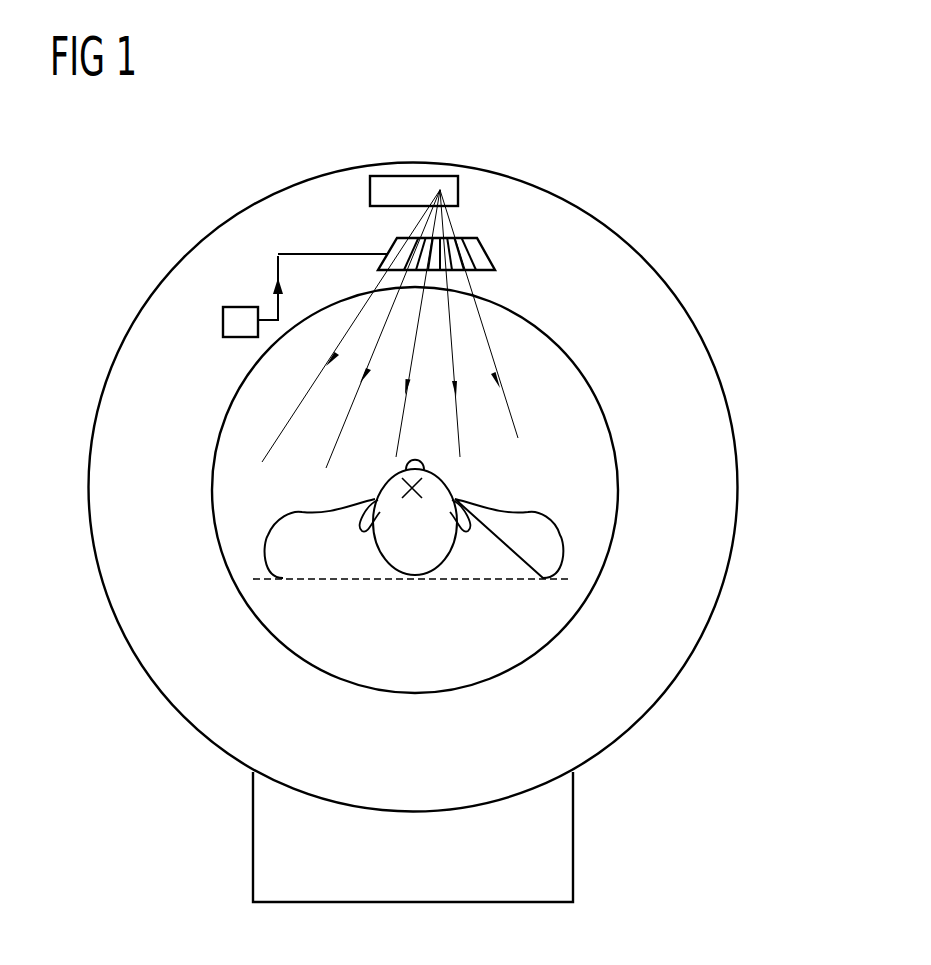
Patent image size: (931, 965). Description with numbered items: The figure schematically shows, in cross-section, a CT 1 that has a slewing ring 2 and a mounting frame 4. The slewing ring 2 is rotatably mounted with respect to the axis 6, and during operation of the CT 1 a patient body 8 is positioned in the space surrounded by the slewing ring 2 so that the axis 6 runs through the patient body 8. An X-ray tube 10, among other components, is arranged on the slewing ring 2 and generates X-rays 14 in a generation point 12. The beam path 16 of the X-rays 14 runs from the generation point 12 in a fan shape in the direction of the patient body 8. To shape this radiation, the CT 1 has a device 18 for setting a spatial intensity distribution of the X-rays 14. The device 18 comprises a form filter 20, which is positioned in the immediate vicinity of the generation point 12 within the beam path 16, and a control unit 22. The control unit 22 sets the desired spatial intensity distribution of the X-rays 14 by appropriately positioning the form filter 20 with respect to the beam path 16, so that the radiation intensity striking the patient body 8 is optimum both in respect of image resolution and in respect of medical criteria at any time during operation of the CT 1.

The CT 1 is at (118, 190).
The slewing ring 2 is at (628, 243).
The mounting frame 4 is at (573, 845).
The axis 6 is at (406, 489).
The patient body 8 is at (563, 548).
The X-ray tube 10 is at (408, 176).
The generation point 12 is at (441, 190).
The X-rays 14 is at (286, 404).
The beam path 16 is at (514, 350).
The device for setting a spatial intensity distribution 18 is at (237, 288).
The form filter 20 is at (500, 249).
The control unit 22 is at (222, 327).